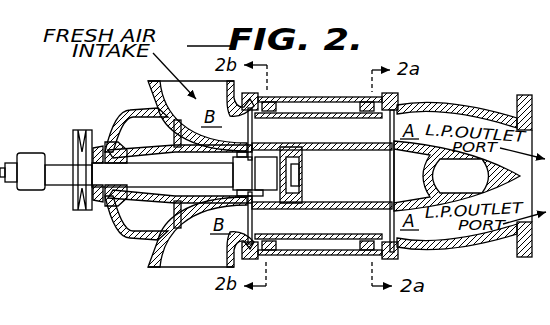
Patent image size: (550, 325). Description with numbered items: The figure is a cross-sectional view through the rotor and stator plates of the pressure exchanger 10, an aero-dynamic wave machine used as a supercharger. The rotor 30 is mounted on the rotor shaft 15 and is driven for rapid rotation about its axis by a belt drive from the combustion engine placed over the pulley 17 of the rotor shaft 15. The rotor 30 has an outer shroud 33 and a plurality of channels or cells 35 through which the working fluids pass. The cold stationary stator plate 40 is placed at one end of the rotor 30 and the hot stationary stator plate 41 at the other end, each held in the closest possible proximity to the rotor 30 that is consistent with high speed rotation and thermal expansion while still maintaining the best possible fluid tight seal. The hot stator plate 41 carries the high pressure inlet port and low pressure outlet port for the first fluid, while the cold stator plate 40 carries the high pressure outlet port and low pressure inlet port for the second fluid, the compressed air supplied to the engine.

The pressure exchanger 10 is at (464, 91).
The rotor shaft 15 is at (79, 172).
The pulley 17 is at (82, 128).
The rotor 30 is at (366, 136).
The outer shroud 33 is at (318, 120).
The channels or cells 35 is at (309, 137).
The cold stationary stator plate 40 is at (146, 84).
The hot stationary stator plate 41 is at (406, 101).